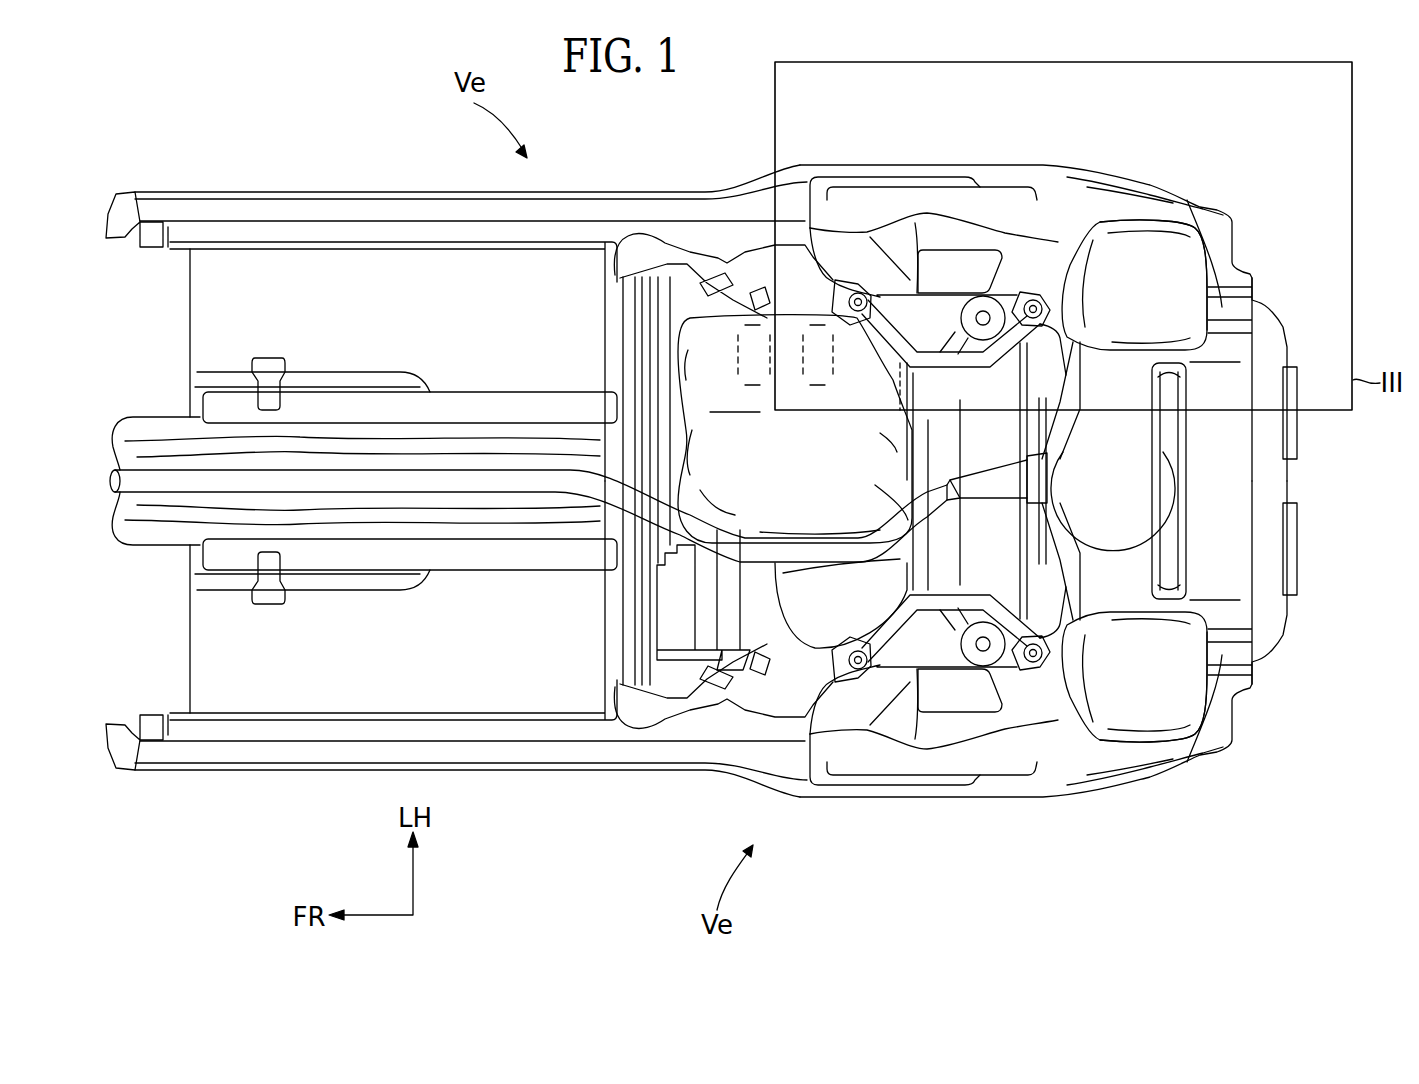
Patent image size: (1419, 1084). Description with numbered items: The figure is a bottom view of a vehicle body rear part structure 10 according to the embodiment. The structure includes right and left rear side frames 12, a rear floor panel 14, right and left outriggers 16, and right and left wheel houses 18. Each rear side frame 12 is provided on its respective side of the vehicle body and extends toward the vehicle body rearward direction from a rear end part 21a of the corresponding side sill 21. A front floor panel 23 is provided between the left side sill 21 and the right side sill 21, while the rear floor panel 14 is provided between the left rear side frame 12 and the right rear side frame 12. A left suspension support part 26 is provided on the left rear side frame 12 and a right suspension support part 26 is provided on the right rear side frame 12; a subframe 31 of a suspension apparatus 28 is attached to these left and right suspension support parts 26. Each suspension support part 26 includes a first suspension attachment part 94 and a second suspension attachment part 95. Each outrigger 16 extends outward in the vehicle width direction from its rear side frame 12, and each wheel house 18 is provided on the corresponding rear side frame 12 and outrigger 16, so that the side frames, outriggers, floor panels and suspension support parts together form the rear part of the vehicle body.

The vehicle body rear part structure 10 is at (800, 156).
The rear side frame 12 is at (1183, 215).
The rear floor panel 14 is at (1217, 347).
The outrigger 16 is at (1052, 258).
The wheel house 18 is at (940, 182).
The side sill 21 is at (367, 212).
The rear end part of side sill 21a is at (674, 232).
The front floor panel 23 is at (247, 267).
The suspension support part 26 is at (980, 187).
The suspension apparatus 28 is at (645, 481).
The subframe 31 is at (1010, 440).
The first suspension attachment part 94 is at (857, 287).
The second suspension attachment part 95 is at (1032, 297).